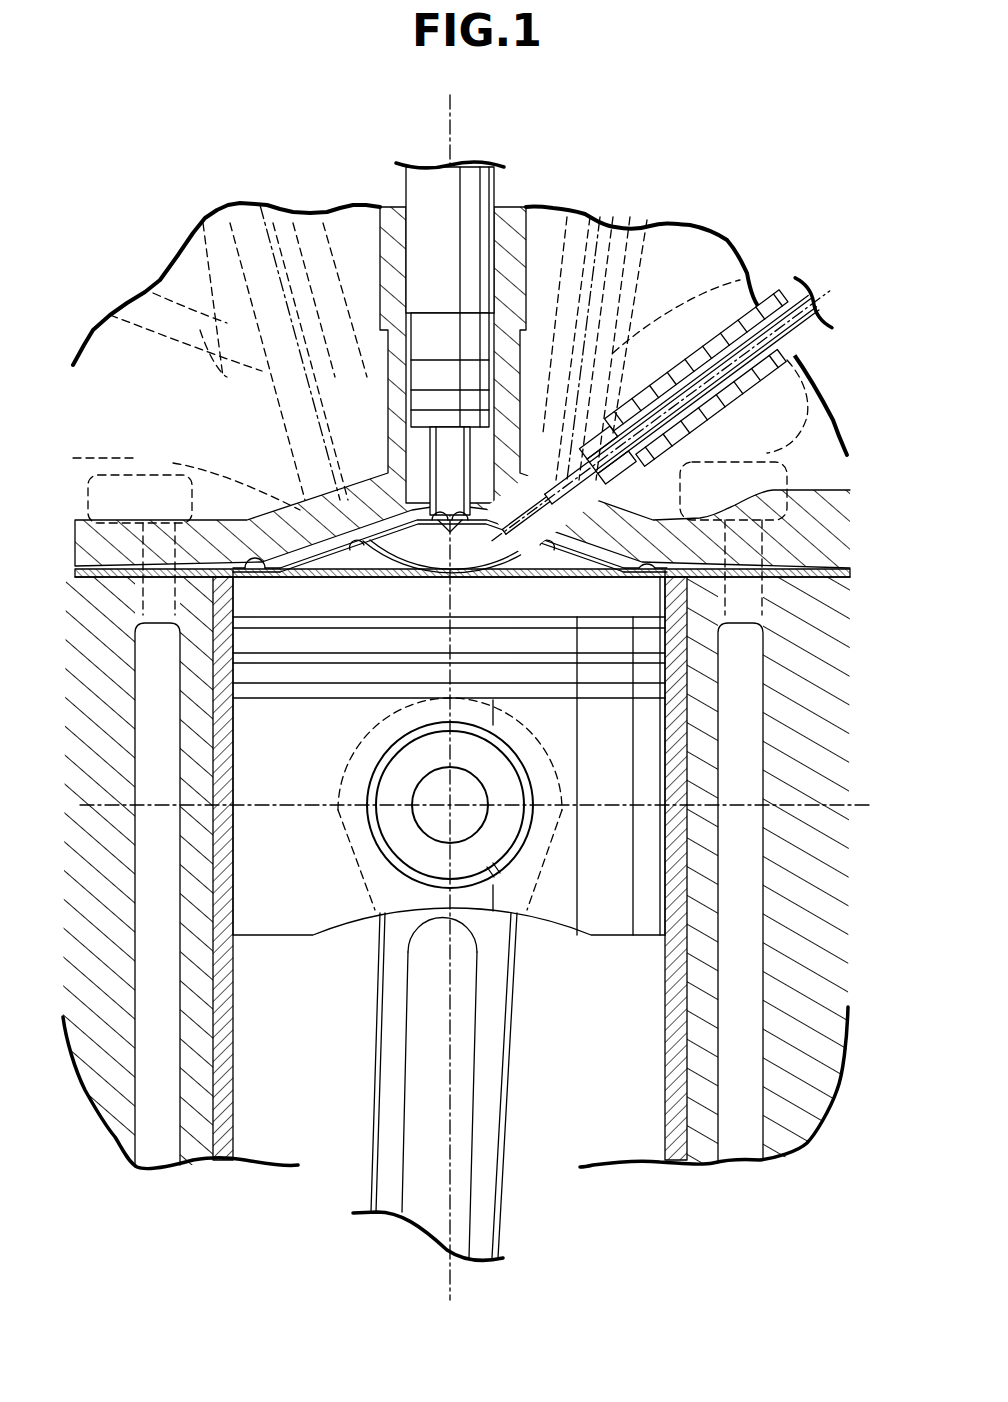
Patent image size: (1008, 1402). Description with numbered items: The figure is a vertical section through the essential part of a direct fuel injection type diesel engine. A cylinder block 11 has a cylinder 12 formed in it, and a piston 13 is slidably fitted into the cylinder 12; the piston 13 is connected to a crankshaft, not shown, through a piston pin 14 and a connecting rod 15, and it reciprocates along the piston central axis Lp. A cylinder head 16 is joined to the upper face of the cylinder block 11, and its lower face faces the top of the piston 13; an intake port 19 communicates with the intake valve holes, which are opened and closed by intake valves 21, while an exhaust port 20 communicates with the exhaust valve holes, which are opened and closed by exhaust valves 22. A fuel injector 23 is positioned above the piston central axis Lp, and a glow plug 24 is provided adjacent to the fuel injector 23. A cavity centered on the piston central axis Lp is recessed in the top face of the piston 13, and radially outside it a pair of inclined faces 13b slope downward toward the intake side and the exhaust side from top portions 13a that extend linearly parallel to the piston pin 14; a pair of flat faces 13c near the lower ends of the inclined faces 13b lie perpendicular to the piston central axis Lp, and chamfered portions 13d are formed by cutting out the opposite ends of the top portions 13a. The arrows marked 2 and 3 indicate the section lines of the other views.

The cylinder block 11 is at (800, 1103).
The cylinder 12 is at (667, 990).
The piston 13 is at (264, 945).
The top portion 13a is at (416, 560).
The inclined face 13b is at (356, 552).
The flat face 13c is at (259, 572).
The chamfered portion 13d is at (470, 558).
The piston pin 14 is at (428, 792).
The connecting rod 15 is at (490, 1063).
The cylinder head 16 is at (820, 490).
The intake port 19 is at (822, 380).
The exhaust port 20 is at (122, 465).
The intake valve 21 is at (600, 383).
The exhaust valve 22 is at (306, 385).
The fuel injector 23 is at (416, 192).
The glow plug 24 is at (782, 302).
The piston central axis Lp is at (447, 1112).
The section line of FIG. 2 is at (163, 573).
The section line of FIG. 3 is at (163, 573).